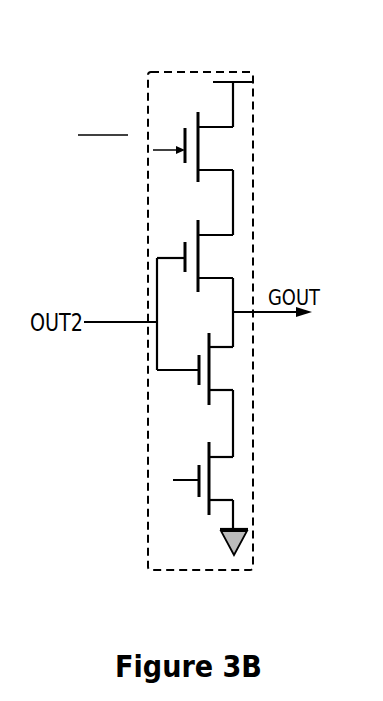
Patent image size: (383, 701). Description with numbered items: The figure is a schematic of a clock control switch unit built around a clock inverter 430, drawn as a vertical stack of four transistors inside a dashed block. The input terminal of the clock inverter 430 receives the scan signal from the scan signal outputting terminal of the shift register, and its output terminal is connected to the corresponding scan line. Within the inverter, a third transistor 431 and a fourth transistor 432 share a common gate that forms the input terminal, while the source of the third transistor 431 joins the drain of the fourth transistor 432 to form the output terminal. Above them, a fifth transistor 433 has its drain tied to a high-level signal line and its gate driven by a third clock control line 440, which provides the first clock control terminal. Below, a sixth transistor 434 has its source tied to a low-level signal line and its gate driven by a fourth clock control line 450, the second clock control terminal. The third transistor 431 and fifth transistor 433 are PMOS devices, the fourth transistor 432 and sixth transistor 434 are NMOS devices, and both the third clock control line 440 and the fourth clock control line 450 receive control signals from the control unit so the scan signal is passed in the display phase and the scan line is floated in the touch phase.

The clock inverter 430 is at (253, 72).
The third transistor 431 is at (217, 258).
The fourth transistor 432 is at (217, 365).
The fifth transistor 433 is at (217, 148).
The sixth transistor 434 is at (217, 477).
The third clock control line 440 is at (168, 149).
The fourth clock control line 450 is at (188, 480).